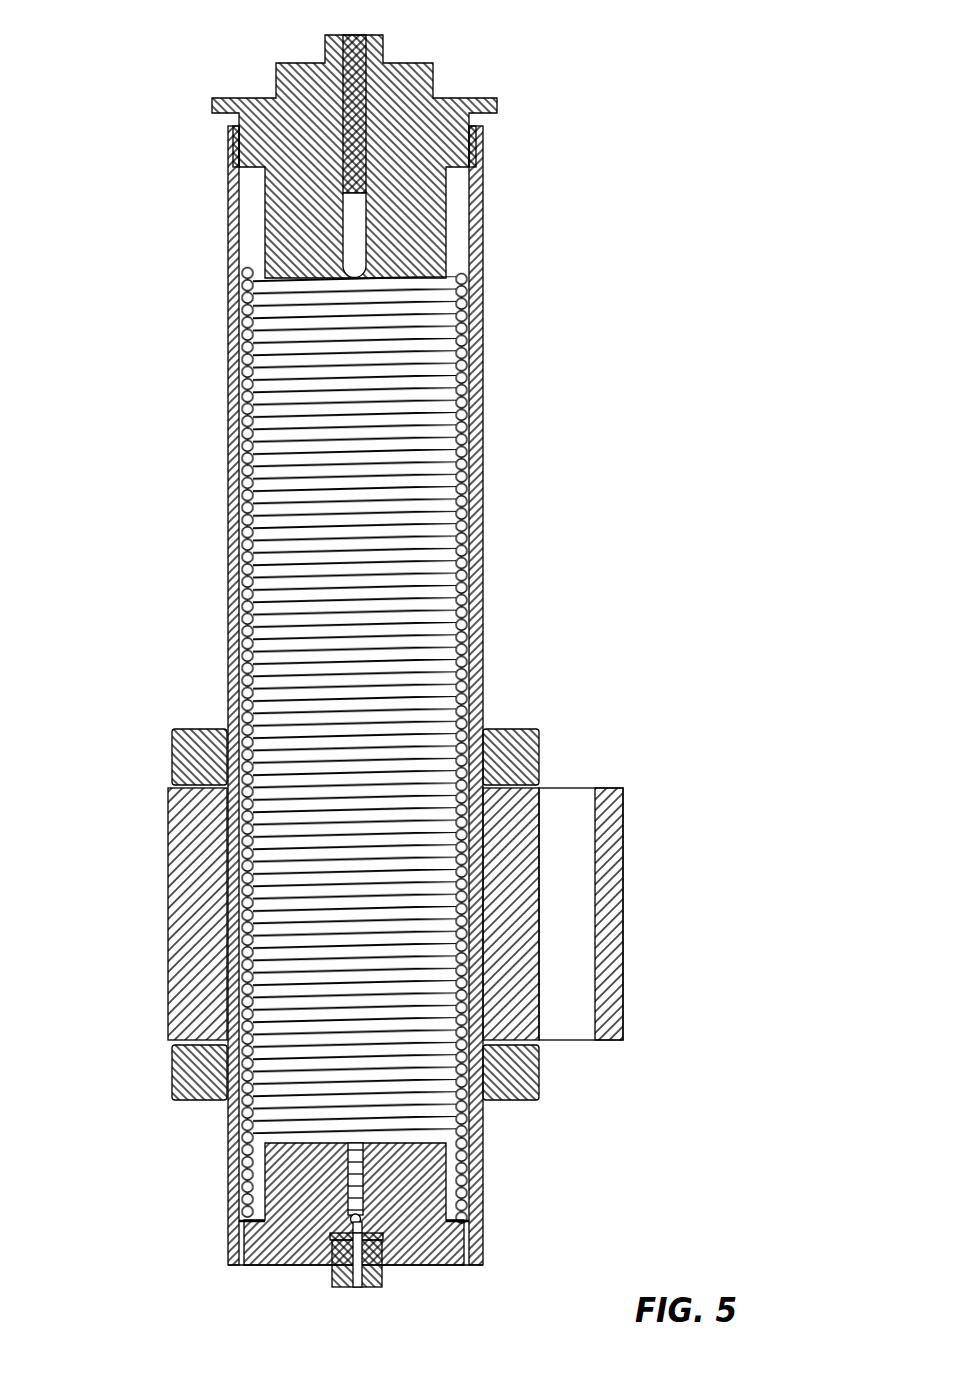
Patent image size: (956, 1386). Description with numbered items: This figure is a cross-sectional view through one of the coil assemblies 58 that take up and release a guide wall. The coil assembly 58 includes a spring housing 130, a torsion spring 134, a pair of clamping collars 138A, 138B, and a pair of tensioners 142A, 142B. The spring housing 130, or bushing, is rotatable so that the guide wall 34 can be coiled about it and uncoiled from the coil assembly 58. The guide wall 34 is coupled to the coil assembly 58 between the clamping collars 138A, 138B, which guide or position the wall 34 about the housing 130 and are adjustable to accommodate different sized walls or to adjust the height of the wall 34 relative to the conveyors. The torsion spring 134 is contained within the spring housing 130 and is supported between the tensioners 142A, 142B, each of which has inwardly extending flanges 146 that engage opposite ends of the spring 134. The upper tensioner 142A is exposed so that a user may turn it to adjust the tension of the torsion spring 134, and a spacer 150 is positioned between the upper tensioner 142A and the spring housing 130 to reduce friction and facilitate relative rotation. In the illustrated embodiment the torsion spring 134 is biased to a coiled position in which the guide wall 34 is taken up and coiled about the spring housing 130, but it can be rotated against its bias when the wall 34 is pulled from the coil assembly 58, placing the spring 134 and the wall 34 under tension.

The coil assembly 58 is at (112, 118).
The upper tensioner 142A is at (418, 63).
The spacer 150 is at (482, 140).
The inwardly extending flanges 146 is at (280, 228).
The spring housing 130 is at (483, 335).
The torsion spring 134 is at (418, 446).
The clamping collar 138A is at (518, 728).
The guide wall 34 is at (192, 930).
The clamping collar 138B is at (527, 1075).
The lower tensioner 142B is at (430, 1257).